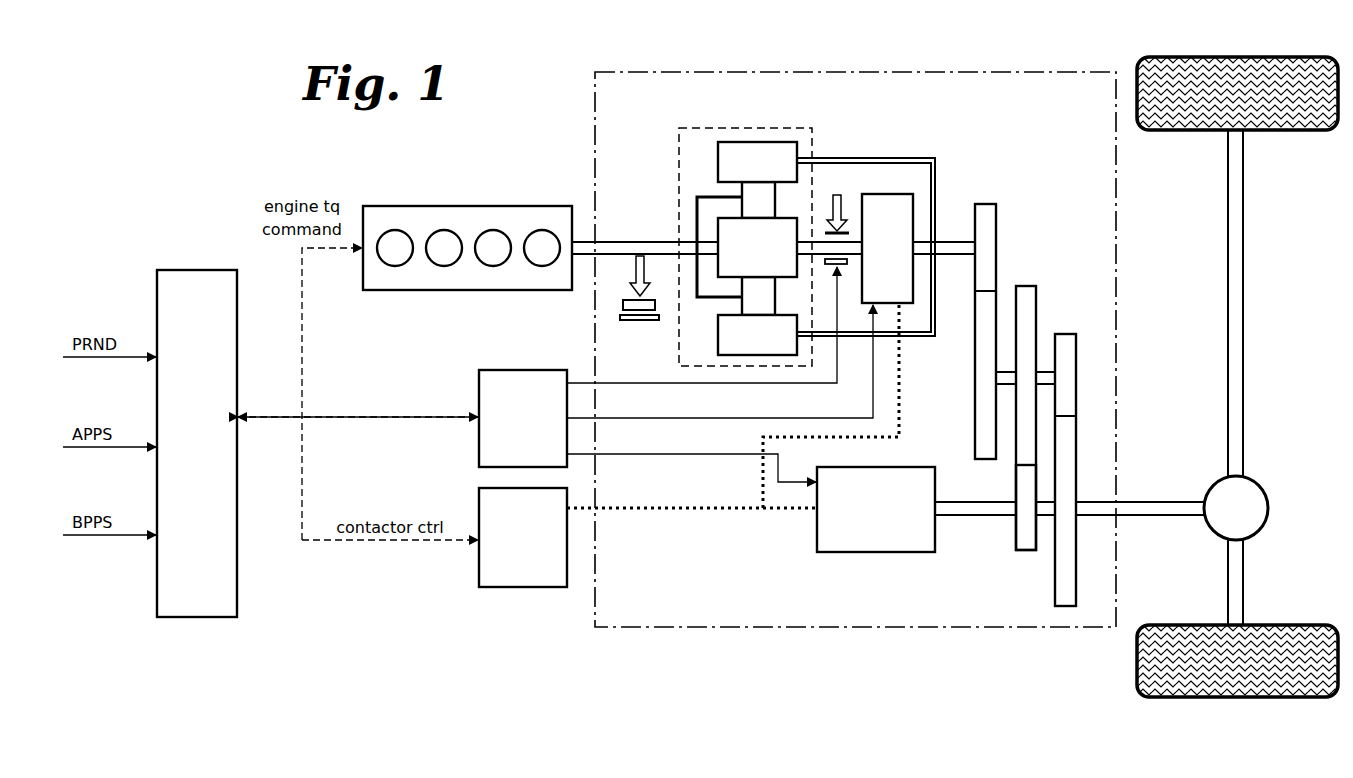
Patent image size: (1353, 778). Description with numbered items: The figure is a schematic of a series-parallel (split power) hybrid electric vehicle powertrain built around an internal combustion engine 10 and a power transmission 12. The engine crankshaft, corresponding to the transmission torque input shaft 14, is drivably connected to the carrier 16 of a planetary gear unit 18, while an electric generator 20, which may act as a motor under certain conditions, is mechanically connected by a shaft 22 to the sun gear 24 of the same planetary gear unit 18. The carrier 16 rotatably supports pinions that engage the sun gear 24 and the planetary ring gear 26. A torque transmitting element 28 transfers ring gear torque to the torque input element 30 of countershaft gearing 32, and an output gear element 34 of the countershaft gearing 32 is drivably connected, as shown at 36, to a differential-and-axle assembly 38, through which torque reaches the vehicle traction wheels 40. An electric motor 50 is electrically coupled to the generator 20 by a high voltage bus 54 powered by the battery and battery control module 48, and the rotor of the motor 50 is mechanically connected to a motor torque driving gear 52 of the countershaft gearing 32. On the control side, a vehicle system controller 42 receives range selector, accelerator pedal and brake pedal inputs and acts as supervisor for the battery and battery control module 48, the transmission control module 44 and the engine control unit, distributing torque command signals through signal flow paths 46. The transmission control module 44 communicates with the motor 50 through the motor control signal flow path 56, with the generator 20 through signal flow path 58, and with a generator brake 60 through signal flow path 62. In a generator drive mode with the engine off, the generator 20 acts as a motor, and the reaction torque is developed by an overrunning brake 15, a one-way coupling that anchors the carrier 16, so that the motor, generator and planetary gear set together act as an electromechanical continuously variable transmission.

The internal combustion engine 10 is at (500, 290).
The power transmission 12 is at (1040, 70).
The transmission torque input shaft 14 is at (623, 240).
The overrunning brake 15 is at (622, 306).
The carrier 16 is at (708, 196).
The planetary gear unit 18 is at (805, 127).
The electric generator 20 is at (933, 199).
The shaft 22 is at (798, 258).
The sun gear 24 is at (718, 233).
The planetary ring gear 26 is at (718, 146).
The torque transmitting element 28 is at (918, 336).
The torque input element 30 is at (998, 231).
The countershaft gearing 32 is at (1038, 362).
The output gear element 34 is at (1055, 576).
The drivable connection 36 is at (1162, 522).
The differential-and-axle assembly 38 is at (1205, 483).
The vehicle traction wheels 40 is at (1262, 57).
The vehicle system controller 42 is at (213, 270).
The transmission control module 44 is at (519, 370).
The signal flow paths 46 is at (368, 428).
The battery and battery control module 48 is at (519, 587).
The electric motor 50 is at (885, 552).
The motor torque driving gear 52 is at (1016, 532).
The high voltage bus 54 is at (749, 512).
The motor control signal flow path 56 is at (752, 458).
The signal flow path 58 is at (848, 414).
The generator brake 60 is at (845, 232).
The signal flow path 62 is at (666, 382).